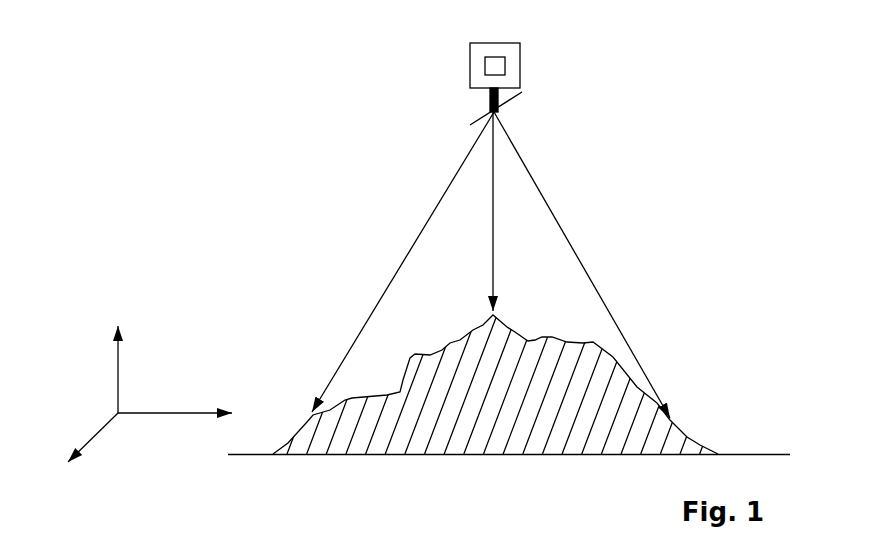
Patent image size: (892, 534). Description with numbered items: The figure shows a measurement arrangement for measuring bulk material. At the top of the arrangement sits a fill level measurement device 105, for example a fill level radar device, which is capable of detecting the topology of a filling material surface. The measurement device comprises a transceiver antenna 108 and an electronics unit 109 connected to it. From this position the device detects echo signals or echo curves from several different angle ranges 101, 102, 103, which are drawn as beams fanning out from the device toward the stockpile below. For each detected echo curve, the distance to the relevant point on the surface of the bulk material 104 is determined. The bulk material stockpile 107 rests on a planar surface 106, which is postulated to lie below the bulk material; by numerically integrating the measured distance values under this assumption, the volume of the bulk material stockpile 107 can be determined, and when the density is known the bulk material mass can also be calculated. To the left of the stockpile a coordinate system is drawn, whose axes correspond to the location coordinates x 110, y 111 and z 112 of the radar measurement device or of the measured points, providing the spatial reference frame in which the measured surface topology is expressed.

The angle range 101 is at (557, 222).
The angle range 102 is at (494, 280).
The angle range 103 is at (387, 288).
The bulk material 104 is at (518, 440).
The fill level measurement device 105 is at (510, 43).
The planar surface 106 is at (747, 454).
The bulk material stockpile 107 is at (592, 340).
The transceiver antenna 108 is at (512, 100).
The electronics unit 109 is at (493, 61).
The location coordinate x 110 is at (157, 414).
The location coordinate y 111 is at (94, 427).
The location coordinate z 112 is at (120, 368).